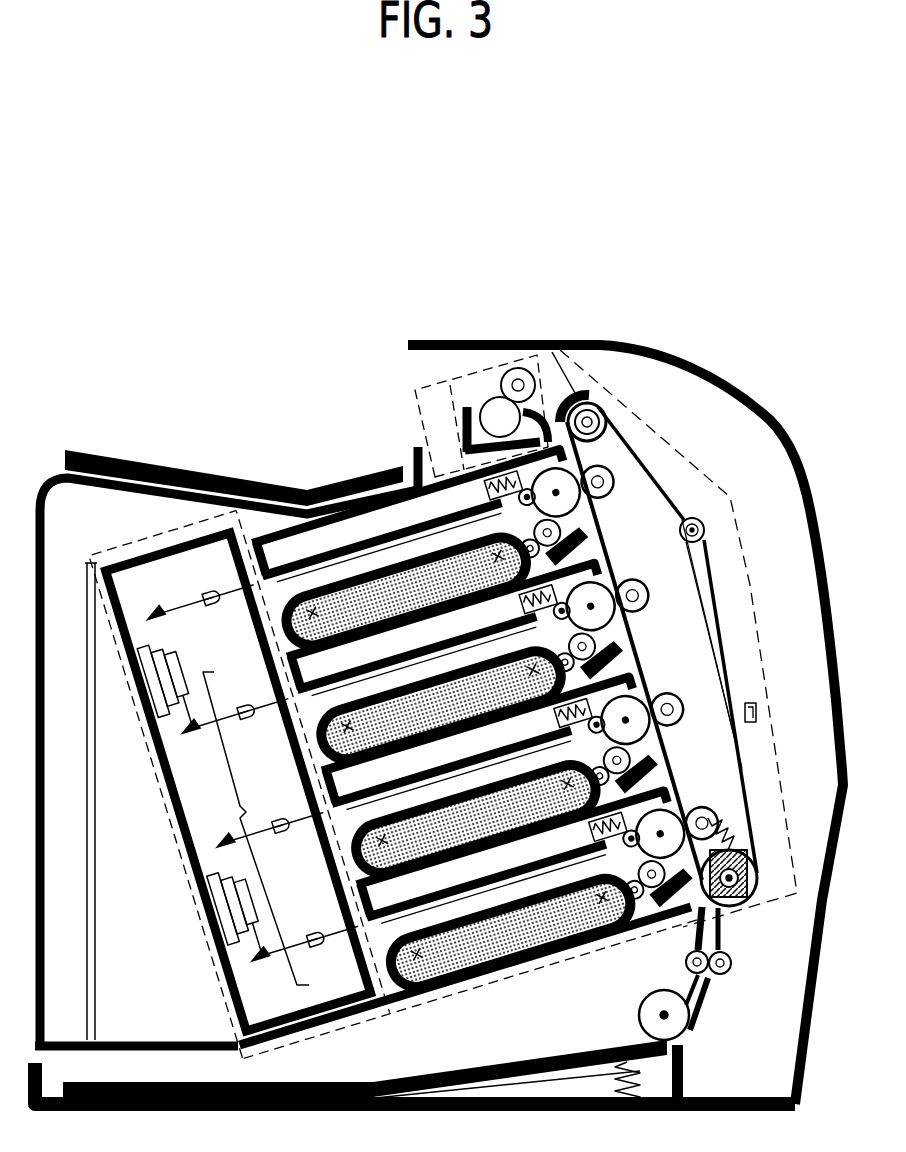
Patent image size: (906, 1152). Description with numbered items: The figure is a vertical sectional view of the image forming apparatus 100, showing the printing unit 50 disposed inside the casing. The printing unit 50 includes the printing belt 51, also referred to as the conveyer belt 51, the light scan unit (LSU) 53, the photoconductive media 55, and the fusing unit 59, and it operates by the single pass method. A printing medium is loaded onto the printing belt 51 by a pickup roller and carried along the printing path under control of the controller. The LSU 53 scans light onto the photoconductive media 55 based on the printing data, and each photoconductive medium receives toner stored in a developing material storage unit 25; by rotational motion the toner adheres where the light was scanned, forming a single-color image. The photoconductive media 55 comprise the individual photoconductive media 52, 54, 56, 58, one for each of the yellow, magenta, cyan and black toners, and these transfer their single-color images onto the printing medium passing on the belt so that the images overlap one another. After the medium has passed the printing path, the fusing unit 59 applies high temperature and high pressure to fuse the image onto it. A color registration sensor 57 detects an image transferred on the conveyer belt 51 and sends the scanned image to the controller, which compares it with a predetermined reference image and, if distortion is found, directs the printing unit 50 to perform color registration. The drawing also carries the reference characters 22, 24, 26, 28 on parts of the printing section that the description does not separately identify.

The image forming apparatus 100 is at (130, 300).
The process cartridge (first) 22 is at (285, 622).
The process cartridge (second) 24 is at (320, 744).
The developing material storage unit 25 is at (256, 828).
The process cartridge (third) 26 is at (355, 856).
The process cartridge (fourth) 28 is at (382, 950).
The printing unit 50 is at (682, 638).
The printing belt 51 is at (722, 544).
The photoconductive medium 52 is at (600, 500).
The light scan unit 53 is at (190, 540).
The photoconductive medium 54 is at (634, 612).
The photoconductive media 55 is at (714, 655).
The photoconductive medium 56 is at (668, 727).
The color registration sensor 57 is at (754, 701).
The photoconductive medium 58 is at (672, 798).
The fusing unit 59 is at (436, 392).